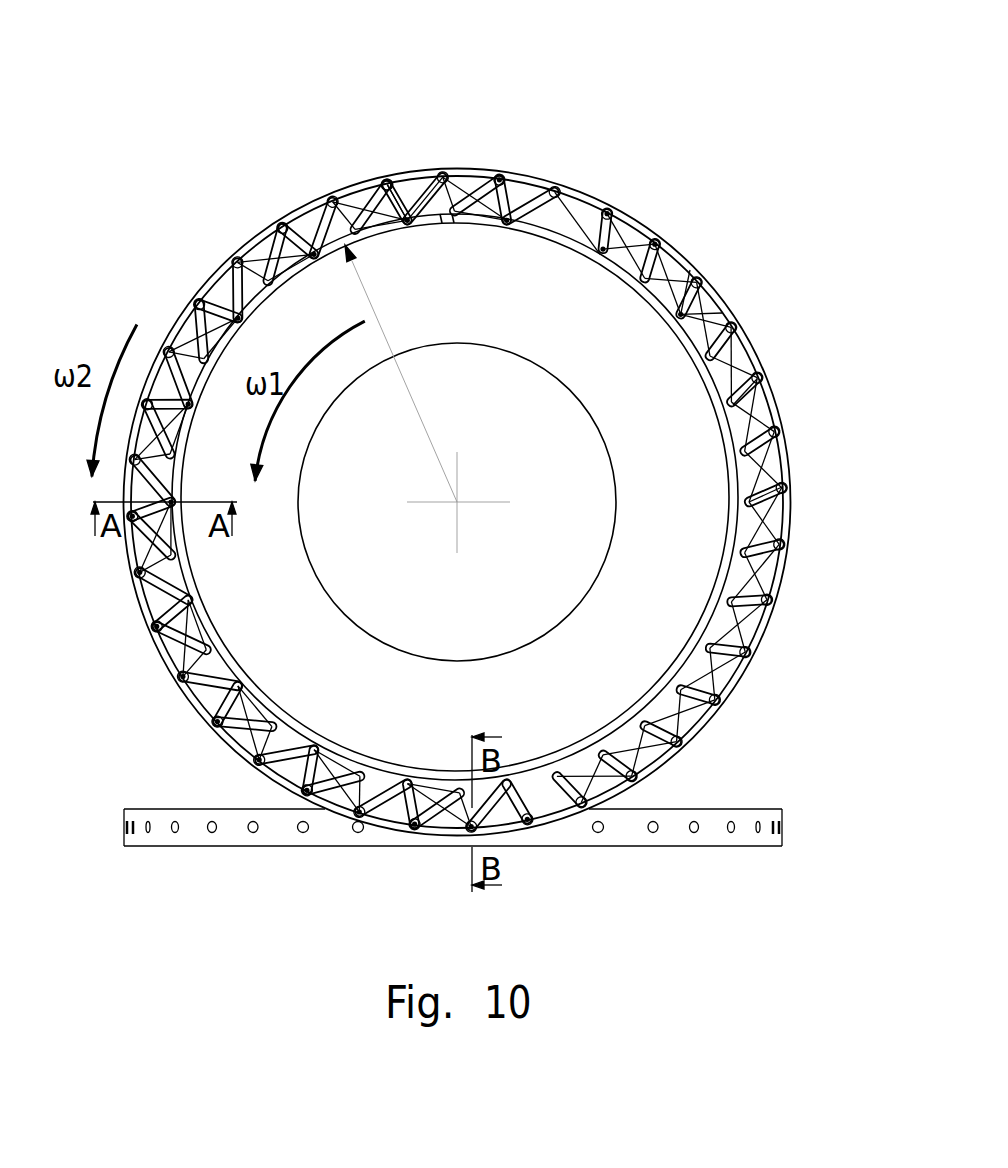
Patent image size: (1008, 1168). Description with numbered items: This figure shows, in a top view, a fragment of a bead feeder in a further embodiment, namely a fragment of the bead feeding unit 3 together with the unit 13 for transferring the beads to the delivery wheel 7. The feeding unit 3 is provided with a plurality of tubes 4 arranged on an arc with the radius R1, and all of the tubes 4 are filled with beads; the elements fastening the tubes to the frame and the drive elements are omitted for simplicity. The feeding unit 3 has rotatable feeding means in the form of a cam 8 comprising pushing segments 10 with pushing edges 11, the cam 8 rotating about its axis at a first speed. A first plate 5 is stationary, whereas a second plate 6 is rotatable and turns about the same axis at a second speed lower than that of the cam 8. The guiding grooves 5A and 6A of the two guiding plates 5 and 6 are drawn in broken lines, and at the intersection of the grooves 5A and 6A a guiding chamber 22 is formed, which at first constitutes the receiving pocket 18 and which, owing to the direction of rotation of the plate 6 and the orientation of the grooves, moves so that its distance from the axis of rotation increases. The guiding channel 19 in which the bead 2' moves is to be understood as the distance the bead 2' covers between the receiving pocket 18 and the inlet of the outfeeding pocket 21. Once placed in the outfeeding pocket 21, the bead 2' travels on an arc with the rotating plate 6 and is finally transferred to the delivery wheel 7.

The bead feeding unit 3 is at (268, 103).
The unit for transferring the beads 13 is at (422, 470).
The guiding channel 19 is at (365, 95).
The guiding chamber 22 is at (425, 252).
The receiving pocket 18 is at (463, 110).
The guiding groove 6A is at (640, 226).
The pushing edge 11 is at (545, 135).
The pushing segment 10 is at (562, 158).
The tube 4 is at (588, 232).
The first plate 5 is at (665, 250).
The second plate 6 is at (705, 287).
The guiding groove 5A is at (593, 308).
The bead 2' is at (455, 446).
The outfeeding pocket 21 is at (439, 438).
The cam 8 is at (245, 632).
The delivery wheel 7 is at (228, 845).
The radius R1 is at (401, 373).